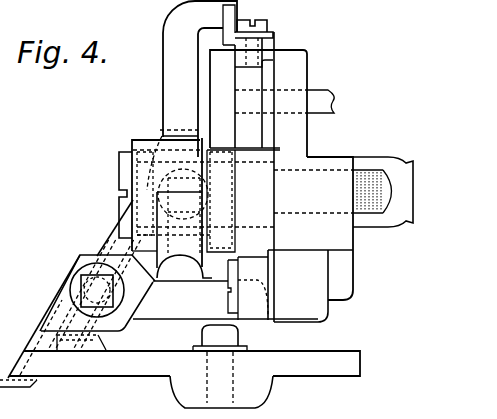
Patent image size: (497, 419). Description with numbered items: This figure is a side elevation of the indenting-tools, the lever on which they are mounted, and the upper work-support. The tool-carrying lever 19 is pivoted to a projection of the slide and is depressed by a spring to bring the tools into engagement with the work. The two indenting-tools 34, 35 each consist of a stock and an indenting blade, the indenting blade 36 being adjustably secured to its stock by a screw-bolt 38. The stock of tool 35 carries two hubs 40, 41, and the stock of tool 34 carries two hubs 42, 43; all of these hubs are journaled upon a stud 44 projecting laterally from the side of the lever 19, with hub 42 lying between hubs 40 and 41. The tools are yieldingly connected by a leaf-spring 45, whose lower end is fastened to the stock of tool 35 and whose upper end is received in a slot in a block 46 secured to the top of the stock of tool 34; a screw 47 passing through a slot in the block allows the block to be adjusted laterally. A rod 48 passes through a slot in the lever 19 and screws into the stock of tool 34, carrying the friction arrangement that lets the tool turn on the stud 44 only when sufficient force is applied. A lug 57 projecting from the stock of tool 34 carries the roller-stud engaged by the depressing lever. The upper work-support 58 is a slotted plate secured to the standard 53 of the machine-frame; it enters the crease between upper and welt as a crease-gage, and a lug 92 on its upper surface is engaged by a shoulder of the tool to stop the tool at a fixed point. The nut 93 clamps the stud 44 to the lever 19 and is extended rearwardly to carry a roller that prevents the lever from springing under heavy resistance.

The tool-carrying lever 19 is at (321, 157).
The indenting-tool 34 is at (202, 362).
The indenting-tool 35 is at (213, 79).
The indenting blade 36 is at (25, 387).
The screw-bolt 38 is at (88, 280).
The hub 40 is at (183, 143).
The hub 41 is at (236, 246).
The hub 42 is at (162, 136).
The hub 43 is at (213, 224).
The stud 44 is at (118, 170).
The leaf-spring 45 is at (170, 23).
The block 46 is at (275, 39).
The screw 47 is at (268, 24).
The rod 48 is at (327, 92).
The standard 53 is at (276, 378).
The lug 57 is at (225, 300).
The upper work-support 58 is at (312, 348).
The lug 92 is at (88, 341).
The nut 93 is at (377, 157).